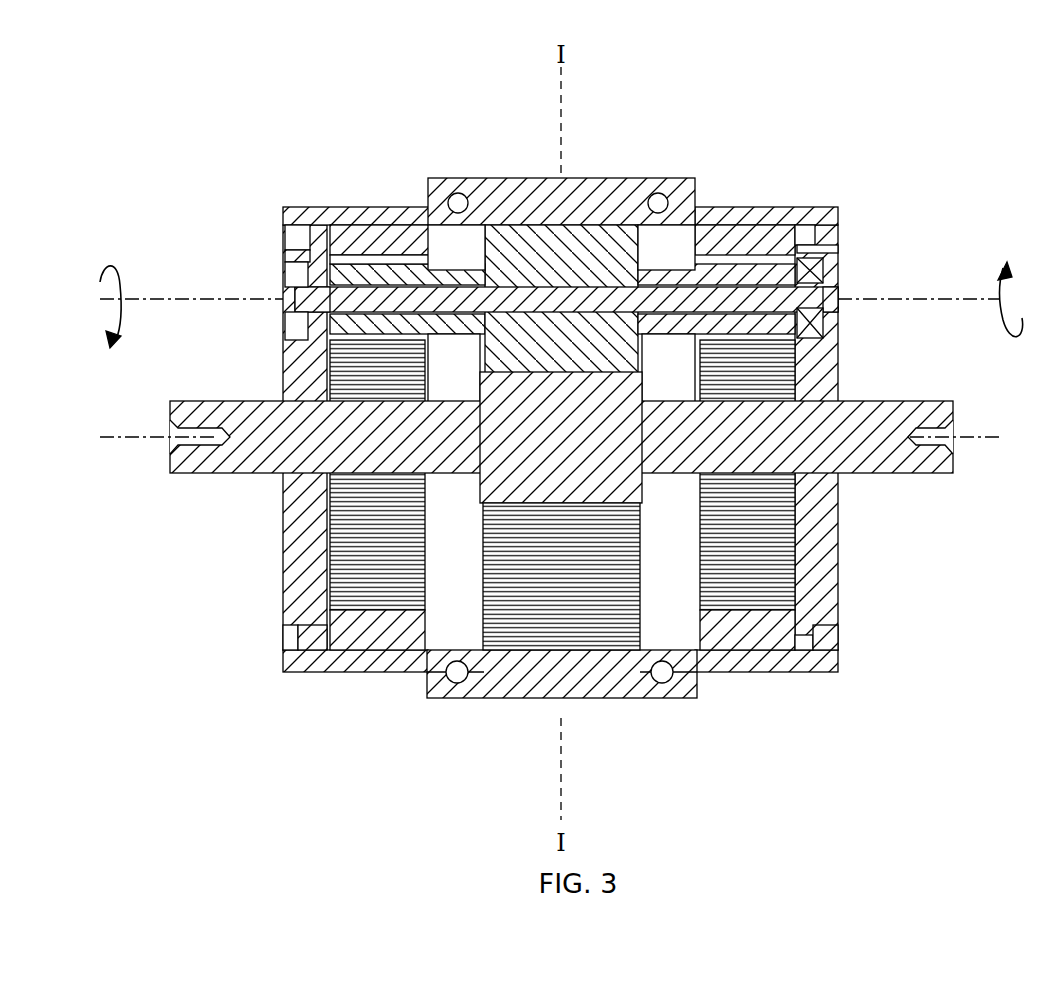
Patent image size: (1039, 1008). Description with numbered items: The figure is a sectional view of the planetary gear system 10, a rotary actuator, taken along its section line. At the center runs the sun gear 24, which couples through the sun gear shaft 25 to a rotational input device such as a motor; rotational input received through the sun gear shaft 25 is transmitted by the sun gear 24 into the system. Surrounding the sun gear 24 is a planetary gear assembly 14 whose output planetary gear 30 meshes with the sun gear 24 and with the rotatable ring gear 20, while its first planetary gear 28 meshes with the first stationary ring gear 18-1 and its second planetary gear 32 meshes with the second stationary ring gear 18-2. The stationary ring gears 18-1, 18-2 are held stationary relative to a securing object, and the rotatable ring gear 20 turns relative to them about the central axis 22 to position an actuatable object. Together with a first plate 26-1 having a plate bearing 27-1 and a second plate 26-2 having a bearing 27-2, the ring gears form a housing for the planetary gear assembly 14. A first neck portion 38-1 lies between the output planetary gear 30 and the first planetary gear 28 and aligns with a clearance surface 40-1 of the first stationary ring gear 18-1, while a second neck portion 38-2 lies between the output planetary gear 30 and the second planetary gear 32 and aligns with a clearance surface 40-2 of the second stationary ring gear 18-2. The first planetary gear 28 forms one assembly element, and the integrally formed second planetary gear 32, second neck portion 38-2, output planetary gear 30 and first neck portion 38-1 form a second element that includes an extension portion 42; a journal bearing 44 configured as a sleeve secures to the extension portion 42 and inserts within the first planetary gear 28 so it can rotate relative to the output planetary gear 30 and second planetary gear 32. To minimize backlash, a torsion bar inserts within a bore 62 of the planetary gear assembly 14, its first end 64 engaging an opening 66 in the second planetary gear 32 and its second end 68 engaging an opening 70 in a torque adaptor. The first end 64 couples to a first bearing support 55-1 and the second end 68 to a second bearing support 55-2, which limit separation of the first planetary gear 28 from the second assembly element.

The planetary gear system 10 is at (872, 106).
The planetary gear assembly 14 is at (262, 232).
The first stationary ring gear 18-1 is at (832, 207).
The second stationary ring gear 18-2 is at (318, 207).
The rotatable ring gear 20 is at (628, 178).
The central axis 22 is at (172, 433).
The sun gear 24 is at (452, 488).
The sun gear shaft 25 is at (935, 401).
The first plate 26-1 is at (840, 572).
The second plate 26-2 is at (290, 478).
The plate bearing 27-1 is at (835, 640).
The bearing 27-2 is at (298, 637).
The first planetary gear 28 is at (728, 265).
The output planetary gear 30 is at (578, 225).
The second planetary gear 32 is at (368, 270).
The first neck portion 38-1 is at (718, 255).
The second neck portion 38-2 is at (449, 268).
The clearance surface 40-1 is at (695, 640).
The clearance surface 40-2 is at (410, 655).
The extension portion 42 is at (832, 276).
The journal bearing 44 is at (775, 328).
The first bearing support 55-1 is at (290, 318).
The second bearing support 55-2 is at (830, 262).
The bore 62 is at (525, 285).
The first end 64 is at (300, 296).
The opening 66 is at (360, 280).
The second end 68 is at (838, 304).
The opening 70 is at (830, 316).